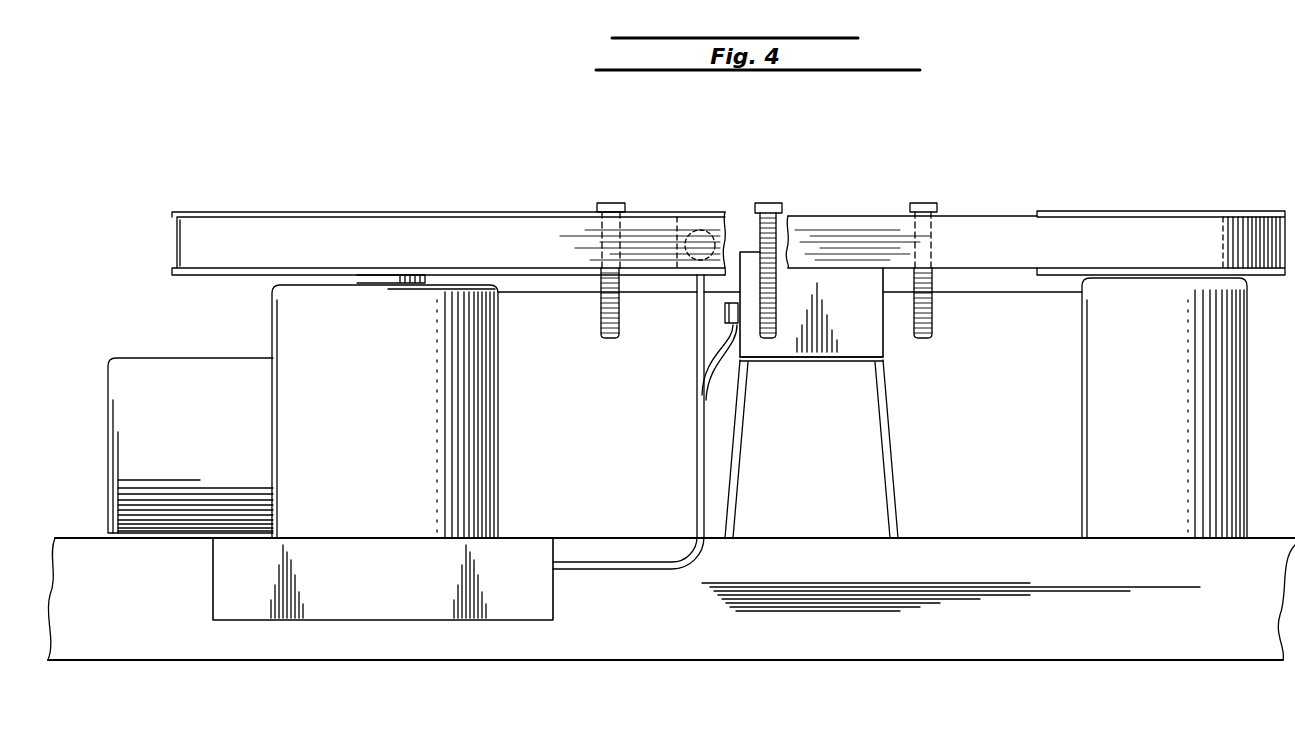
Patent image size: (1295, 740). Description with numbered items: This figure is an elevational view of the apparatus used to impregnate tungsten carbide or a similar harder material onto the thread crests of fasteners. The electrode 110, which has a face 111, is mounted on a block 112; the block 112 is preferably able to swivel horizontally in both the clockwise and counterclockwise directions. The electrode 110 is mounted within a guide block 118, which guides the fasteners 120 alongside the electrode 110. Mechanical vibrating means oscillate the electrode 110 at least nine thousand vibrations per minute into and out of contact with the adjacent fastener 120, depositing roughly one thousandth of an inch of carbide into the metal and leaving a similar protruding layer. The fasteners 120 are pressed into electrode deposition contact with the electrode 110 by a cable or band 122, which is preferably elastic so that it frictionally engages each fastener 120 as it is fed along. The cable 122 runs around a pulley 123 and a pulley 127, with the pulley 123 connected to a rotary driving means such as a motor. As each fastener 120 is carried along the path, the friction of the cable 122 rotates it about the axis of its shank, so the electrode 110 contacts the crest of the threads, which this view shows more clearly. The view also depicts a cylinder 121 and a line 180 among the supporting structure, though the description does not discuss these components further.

The electrode 110 is at (889, 326).
The face 111 is at (862, 330).
The block 112 is at (778, 360).
The guide block 118 is at (911, 222).
The fasteners 120 is at (612, 202).
The cylinder 121 is at (390, 421).
The cable or band 122 is at (1111, 225).
The pulley 123 is at (343, 216).
The pulley 127 is at (1216, 210).
The hydraulic line 180 is at (737, 229).